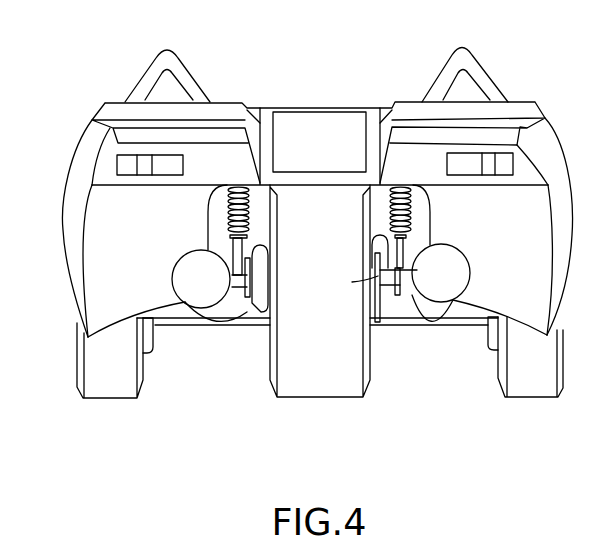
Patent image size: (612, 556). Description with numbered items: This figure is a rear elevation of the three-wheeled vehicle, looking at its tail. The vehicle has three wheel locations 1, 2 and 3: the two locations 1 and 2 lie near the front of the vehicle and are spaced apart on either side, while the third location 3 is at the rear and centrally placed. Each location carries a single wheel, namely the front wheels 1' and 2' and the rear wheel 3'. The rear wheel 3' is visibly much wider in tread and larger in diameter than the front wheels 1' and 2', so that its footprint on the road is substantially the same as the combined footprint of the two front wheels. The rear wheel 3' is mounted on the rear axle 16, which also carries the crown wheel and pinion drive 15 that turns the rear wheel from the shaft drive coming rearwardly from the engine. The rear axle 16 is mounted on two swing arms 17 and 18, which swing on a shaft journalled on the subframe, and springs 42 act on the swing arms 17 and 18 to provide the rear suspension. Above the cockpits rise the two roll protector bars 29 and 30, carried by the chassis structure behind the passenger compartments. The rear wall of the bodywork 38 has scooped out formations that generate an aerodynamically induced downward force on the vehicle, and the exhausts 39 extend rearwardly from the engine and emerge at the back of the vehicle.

The wheel location 1 is at (546, 386).
The front wheel 1' is at (546, 357).
The wheel location 2 is at (90, 394).
The front wheel 2' is at (90, 358).
The wheel location 3 is at (320, 328).
The rear wheel 3' is at (320, 316).
The crown wheel and pinion drive 15 is at (260, 313).
The rear axle 16 is at (390, 283).
The swing arm 17 is at (245, 298).
The swing arm 18 is at (398, 296).
The roll protector bar 29 is at (466, 57).
The roll protector bar 30 is at (167, 62).
The bodywork 38 is at (100, 240).
The exhaust 39 is at (187, 275).
The spring 42 is at (227, 210).